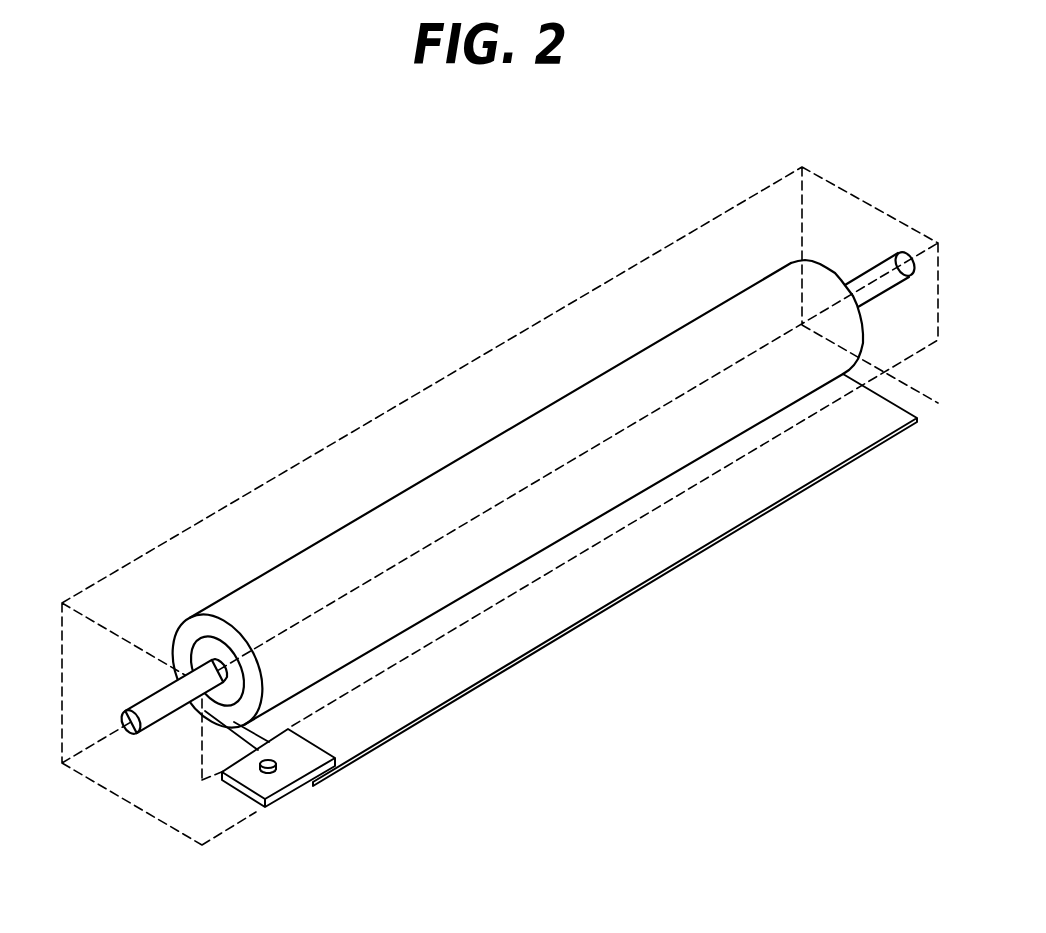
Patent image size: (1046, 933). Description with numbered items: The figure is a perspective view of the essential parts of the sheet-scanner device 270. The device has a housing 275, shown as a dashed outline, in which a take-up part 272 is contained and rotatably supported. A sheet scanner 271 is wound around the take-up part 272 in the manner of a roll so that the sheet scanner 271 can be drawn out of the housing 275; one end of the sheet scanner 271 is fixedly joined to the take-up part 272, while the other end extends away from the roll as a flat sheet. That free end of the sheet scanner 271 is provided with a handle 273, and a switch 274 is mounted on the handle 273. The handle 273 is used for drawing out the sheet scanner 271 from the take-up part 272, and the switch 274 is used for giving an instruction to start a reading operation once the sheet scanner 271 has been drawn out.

The sheet-scanner device 270 is at (455, 340).
The sheet scanner 271 is at (411, 484).
The take-up part 272 is at (176, 647).
The handle 273 is at (313, 748).
The switch 274 is at (277, 771).
The housing 275 is at (679, 236).